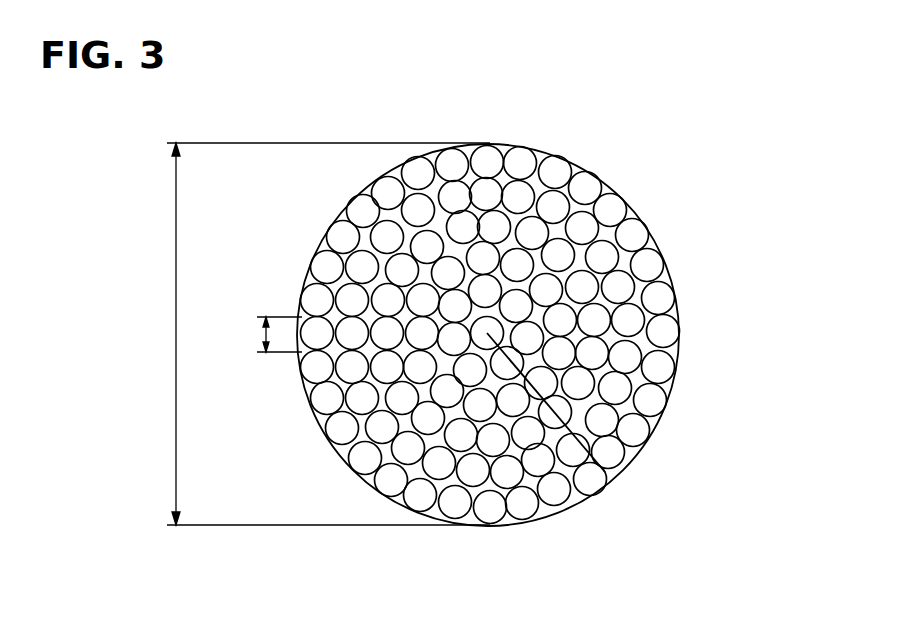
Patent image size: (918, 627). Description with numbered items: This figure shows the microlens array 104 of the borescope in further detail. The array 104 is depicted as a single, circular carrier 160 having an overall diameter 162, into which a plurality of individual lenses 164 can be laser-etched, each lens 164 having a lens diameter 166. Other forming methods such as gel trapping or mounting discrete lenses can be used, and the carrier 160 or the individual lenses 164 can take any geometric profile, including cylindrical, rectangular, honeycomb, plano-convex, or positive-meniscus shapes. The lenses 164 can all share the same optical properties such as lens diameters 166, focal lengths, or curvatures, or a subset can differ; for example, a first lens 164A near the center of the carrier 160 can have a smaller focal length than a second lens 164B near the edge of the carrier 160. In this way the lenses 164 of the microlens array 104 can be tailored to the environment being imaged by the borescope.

The microlens array 104 is at (737, 215).
The carrier 160 is at (677, 353).
The overall diameter 162 is at (305, 334).
The lenses 164 is at (390, 193).
The first lens 164A is at (605, 472).
The second lens 164B is at (633, 430).
The lens diameter 166 is at (263, 334).